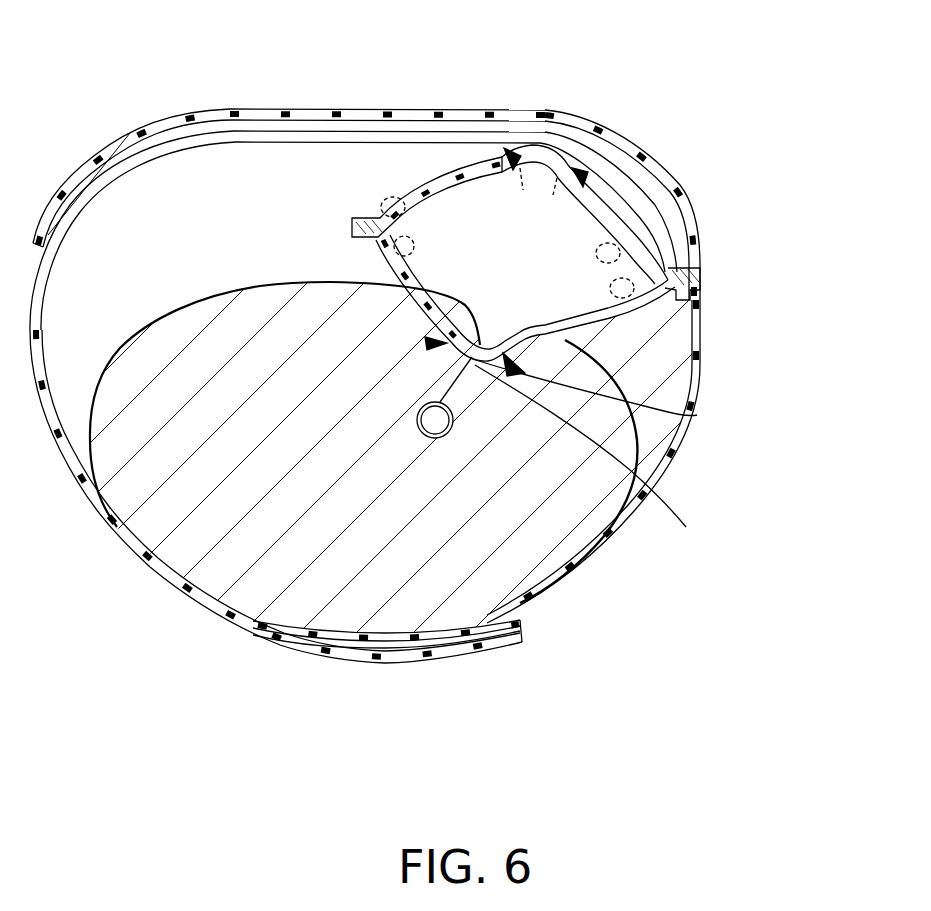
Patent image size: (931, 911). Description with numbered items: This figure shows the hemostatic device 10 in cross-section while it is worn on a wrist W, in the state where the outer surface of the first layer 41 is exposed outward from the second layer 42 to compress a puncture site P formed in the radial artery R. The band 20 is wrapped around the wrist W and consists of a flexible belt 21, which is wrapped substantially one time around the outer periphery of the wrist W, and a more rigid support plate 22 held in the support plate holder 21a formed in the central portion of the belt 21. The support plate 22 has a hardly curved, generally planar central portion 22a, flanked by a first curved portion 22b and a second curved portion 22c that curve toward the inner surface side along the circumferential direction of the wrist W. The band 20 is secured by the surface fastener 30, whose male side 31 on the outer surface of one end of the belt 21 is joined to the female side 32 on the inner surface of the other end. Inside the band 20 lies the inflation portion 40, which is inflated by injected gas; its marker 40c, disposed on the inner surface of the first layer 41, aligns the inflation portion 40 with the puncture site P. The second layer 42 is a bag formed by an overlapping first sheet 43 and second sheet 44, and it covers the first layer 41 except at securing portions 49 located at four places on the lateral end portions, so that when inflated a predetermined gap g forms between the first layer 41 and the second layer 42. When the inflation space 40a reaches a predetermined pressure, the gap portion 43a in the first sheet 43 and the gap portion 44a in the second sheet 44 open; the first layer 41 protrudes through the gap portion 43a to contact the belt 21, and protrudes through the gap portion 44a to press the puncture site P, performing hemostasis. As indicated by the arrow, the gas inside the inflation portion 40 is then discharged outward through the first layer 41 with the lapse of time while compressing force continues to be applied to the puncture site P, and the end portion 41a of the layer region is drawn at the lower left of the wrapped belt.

The hemostatic device 10 is at (155, 100).
The band 20 is at (374, 150).
The belt 21 is at (203, 120).
The support plate holder 21a is at (441, 117).
The support plate 22 is at (243, 126).
The central portion 22a is at (378, 128).
The first curved portion 22b is at (622, 186).
The second curved portion 22c is at (117, 147).
The surface fastener 30 is at (403, 697).
The male side 31 is at (435, 646).
The female side 32 is at (412, 660).
The inflation portion 40 is at (560, 348).
The inflation space 40a is at (418, 210).
The marker 40c is at (455, 327).
The first layer 41 is at (643, 217).
The inner layer lower end portion 41a is at (184, 560).
The second layer 42 is at (646, 445).
The first sheet 43 is at (700, 275).
The gap portion 43a is at (592, 185).
The second sheet 44 is at (692, 322).
The gap portion 44a is at (613, 332).
The securing portions 49 is at (414, 246).
The gap g is at (607, 315).
The puncture site P is at (686, 527).
The radial artery R is at (575, 556).
The wrist W is at (567, 549).